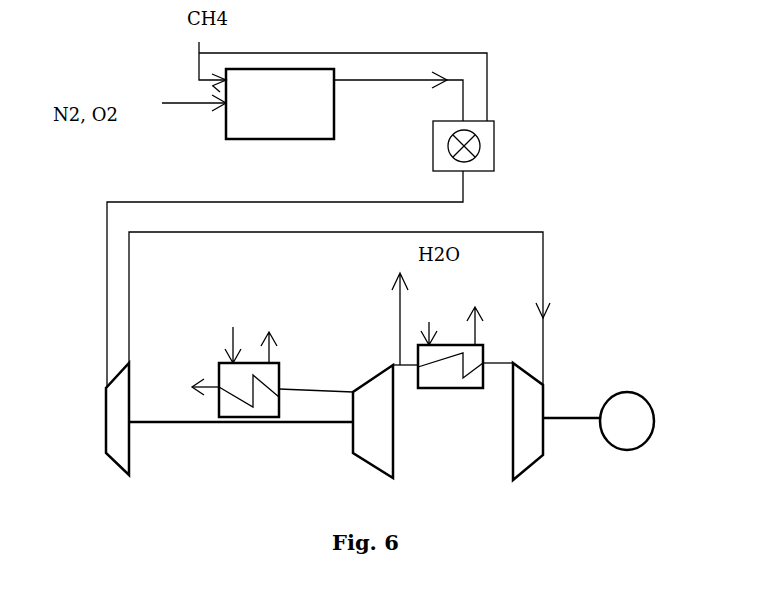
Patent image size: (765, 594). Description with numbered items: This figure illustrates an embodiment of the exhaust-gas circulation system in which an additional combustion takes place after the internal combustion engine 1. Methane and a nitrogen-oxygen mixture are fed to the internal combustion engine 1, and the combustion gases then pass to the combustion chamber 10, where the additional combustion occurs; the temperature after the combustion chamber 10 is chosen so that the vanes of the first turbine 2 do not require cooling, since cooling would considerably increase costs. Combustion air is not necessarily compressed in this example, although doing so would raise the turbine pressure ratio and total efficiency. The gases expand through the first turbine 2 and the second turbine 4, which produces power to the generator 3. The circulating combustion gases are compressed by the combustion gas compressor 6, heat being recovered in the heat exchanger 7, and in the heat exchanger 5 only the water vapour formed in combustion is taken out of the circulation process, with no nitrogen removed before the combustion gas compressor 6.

The internal combustion engine 1 is at (242, 140).
The first turbine 2 is at (102, 396).
The generator 3 is at (645, 421).
The second turbine 4 is at (540, 421).
The heat exchanger 5 is at (462, 343).
The combustion gas compressor 6 is at (352, 438).
The heat exchanger 7 is at (235, 418).
The combustion chamber 10 is at (495, 133).